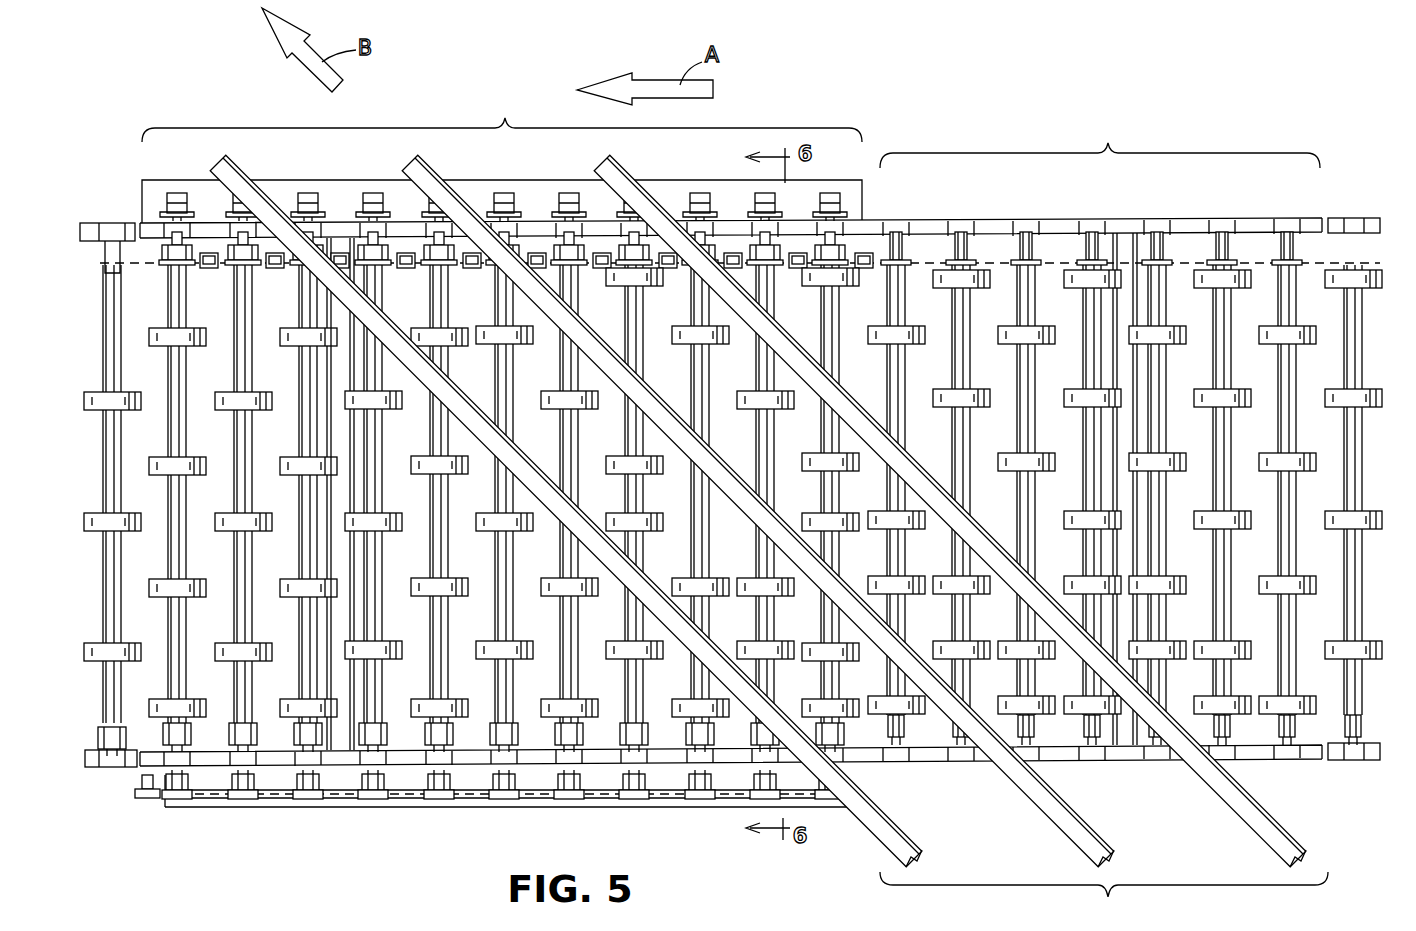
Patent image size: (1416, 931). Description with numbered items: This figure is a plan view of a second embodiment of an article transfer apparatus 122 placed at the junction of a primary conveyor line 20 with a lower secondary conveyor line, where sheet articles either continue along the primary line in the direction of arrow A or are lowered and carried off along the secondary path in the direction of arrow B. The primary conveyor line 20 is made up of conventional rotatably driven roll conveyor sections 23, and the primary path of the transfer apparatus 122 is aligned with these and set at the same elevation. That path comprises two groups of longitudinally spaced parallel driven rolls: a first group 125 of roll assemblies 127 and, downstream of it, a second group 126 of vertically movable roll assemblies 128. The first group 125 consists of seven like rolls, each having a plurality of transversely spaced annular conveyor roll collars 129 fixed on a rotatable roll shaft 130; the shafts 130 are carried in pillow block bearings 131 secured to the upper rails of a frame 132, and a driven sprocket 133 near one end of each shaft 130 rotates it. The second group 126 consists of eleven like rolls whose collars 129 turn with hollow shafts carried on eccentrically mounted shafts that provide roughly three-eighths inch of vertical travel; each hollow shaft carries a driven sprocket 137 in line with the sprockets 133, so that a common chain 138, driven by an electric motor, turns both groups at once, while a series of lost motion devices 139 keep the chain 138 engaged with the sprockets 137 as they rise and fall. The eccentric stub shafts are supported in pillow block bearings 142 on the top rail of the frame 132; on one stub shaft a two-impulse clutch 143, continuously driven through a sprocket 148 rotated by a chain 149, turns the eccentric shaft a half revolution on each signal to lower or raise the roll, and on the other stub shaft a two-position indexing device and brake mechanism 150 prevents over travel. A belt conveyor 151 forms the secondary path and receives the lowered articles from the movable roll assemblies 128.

The primary conveyor line 20 is at (1384, 340).
The roll conveyor sections 23 is at (92, 222).
The article transfer apparatus 122 is at (866, 855).
The first group of roll assemblies 125 is at (1100, 143).
The second group of roll assemblies 126 is at (502, 158).
The roll assembly 127 is at (950, 342).
The vertically movable roll assembly 128 is at (681, 400).
The conveyor roll collar 129 is at (985, 278).
The roll shaft 130 is at (965, 334).
The pillow block bearing 131 is at (1027, 220).
The frame 132 is at (1063, 223).
The driven sprocket 133 is at (1075, 266).
The driven sprocket 137 is at (290, 266).
The common chain 138 is at (670, 264).
The lost motion device 139 is at (485, 288).
The pillow block bearing 142 is at (763, 228).
The two-impulse clutch 143 is at (433, 779).
The sprocket 148 is at (230, 800).
The chain 149 is at (277, 797).
The two-position indexing device and brake mechanism 150 is at (371, 192).
The belt conveyor 151 is at (865, 540).